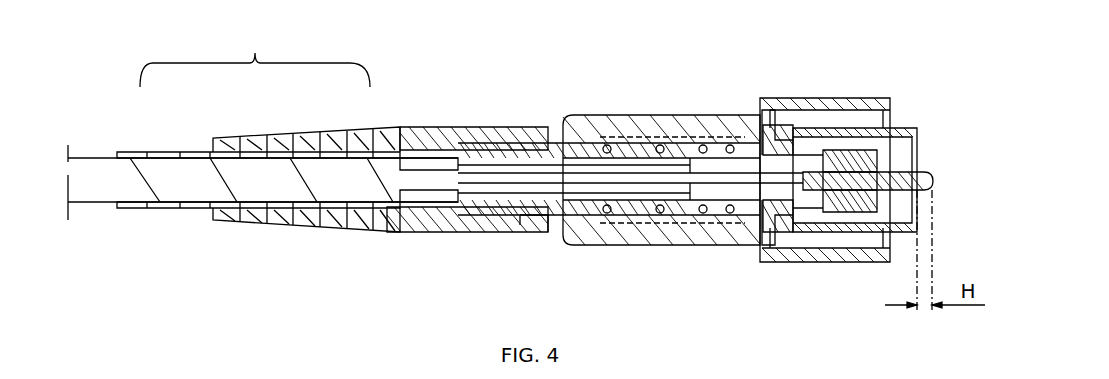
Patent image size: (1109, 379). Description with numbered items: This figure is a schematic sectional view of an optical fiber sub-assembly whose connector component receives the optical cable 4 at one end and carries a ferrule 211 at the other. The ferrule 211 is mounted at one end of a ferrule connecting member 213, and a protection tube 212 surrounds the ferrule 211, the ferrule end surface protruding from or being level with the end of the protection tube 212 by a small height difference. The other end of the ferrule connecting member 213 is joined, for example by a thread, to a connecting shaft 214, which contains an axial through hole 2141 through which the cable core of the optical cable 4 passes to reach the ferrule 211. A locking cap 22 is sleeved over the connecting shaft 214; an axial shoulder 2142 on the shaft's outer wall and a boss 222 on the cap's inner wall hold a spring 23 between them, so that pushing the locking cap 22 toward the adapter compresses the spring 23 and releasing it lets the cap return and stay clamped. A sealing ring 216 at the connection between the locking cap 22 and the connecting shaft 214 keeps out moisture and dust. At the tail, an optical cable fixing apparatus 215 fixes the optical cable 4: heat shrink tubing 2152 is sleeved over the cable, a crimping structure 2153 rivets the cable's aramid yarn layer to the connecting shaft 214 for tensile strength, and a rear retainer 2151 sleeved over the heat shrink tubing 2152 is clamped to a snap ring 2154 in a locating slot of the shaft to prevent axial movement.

The optical cable 4 is at (87, 156).
The optical cable fixing apparatus 215 is at (255, 56).
The rear retainer 2151 is at (259, 141).
The heat shrink tubing 2152 is at (148, 150).
The crimping structure 2153 is at (387, 146).
The snap ring 2154 is at (533, 226).
The boss 222 is at (584, 129).
The spring 23 is at (647, 133).
The axial shoulder 2142 is at (706, 131).
The sealing ring 216 is at (727, 132).
The locking cap 22 is at (790, 99).
The protection tube 212 is at (920, 135).
The ferrule 211 is at (920, 212).
The ferrule connecting member 213 is at (784, 208).
The connecting shaft 214 is at (608, 206).
The through hole 2141 is at (654, 190).